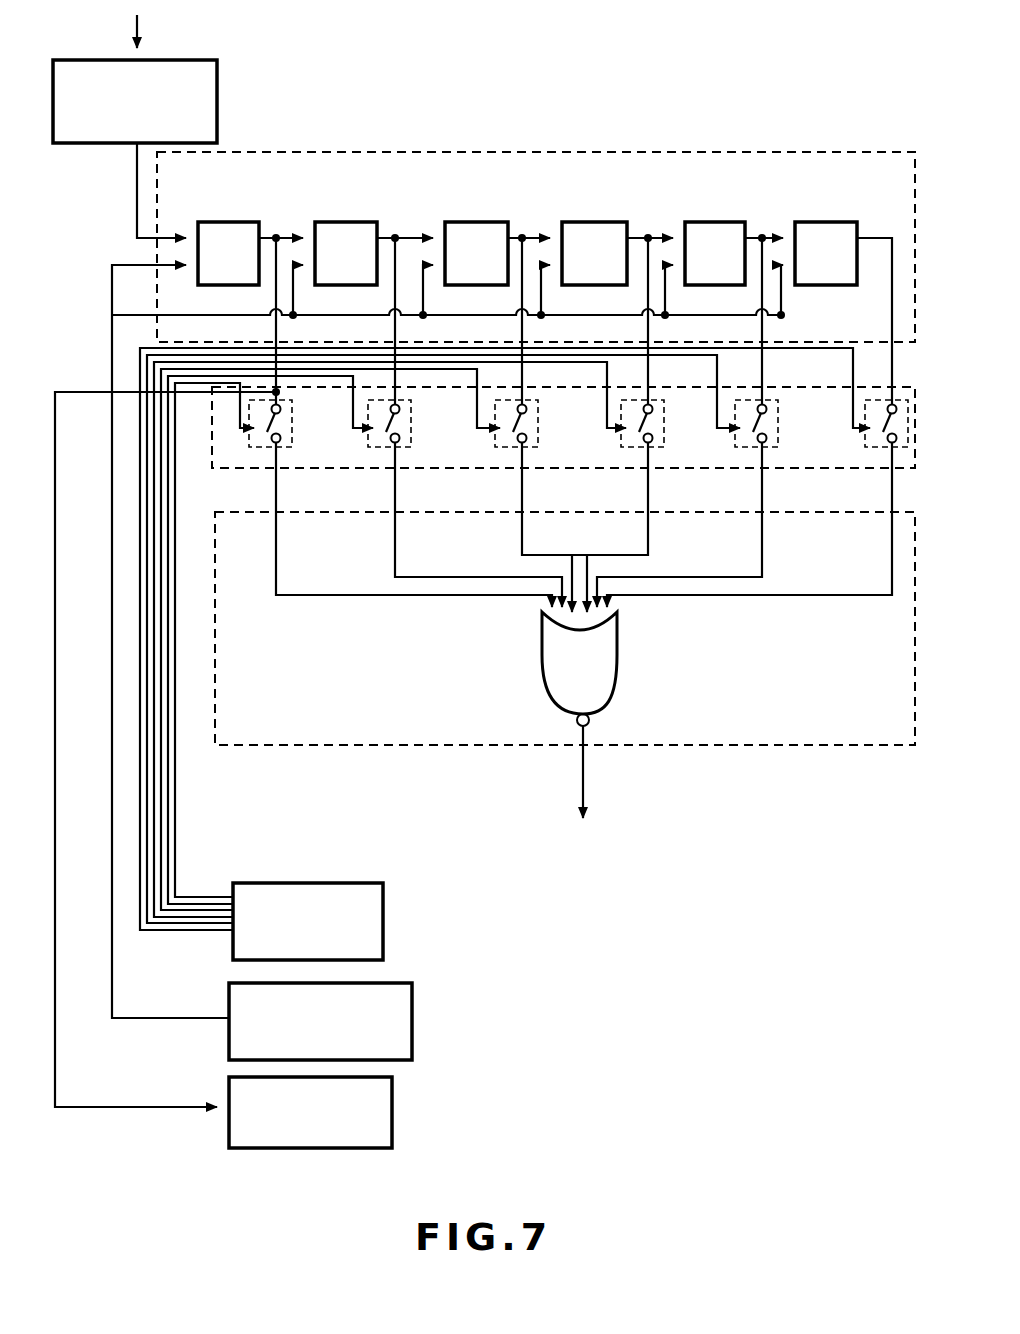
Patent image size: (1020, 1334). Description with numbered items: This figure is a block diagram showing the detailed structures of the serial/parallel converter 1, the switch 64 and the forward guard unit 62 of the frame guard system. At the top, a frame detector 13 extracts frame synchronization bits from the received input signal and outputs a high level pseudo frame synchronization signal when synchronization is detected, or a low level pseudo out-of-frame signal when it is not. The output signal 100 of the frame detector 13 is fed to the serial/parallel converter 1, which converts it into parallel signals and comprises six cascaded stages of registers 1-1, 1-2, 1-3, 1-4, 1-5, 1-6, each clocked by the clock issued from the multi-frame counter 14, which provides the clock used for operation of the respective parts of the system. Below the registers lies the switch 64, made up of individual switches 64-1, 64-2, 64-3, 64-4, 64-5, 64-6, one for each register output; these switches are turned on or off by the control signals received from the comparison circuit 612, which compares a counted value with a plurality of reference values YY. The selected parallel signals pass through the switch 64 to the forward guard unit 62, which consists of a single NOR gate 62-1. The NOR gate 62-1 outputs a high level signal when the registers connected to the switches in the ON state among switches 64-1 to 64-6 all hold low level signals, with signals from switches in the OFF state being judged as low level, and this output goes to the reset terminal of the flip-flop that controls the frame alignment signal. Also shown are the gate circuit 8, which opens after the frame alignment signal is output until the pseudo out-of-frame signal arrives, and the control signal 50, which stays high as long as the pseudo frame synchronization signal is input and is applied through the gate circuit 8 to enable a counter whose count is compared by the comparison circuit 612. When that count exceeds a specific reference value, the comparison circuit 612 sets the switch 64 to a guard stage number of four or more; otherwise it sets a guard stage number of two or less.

The frame detector 13 is at (217, 105).
The output signal of the frame detector 100 is at (150, 236).
The serial/parallel converter 1 is at (313, 151).
The register 1-1 is at (228, 222).
The register 1-2 is at (340, 222).
The register 1-3 is at (470, 222).
The register 1-4 is at (598, 222).
The register 1-5 is at (716, 222).
The register 1-6 is at (822, 222).
The switch 64 is at (563, 427).
The switch 64-1 is at (283, 444).
The switch 64-2 is at (411, 444).
The switch 64-3 is at (538, 444).
The switch 64-4 is at (664, 420).
The switch 64-5 is at (778, 412).
The switch 64-6 is at (860, 440).
The forward guard unit 62 is at (252, 747).
The NOR gate 62-1 is at (617, 670).
The comparison circuit 612 is at (383, 918).
The multi-frame counter 14 is at (412, 1025).
The gate circuit 8 is at (392, 1117).
The control signal 50 is at (120, 1110).